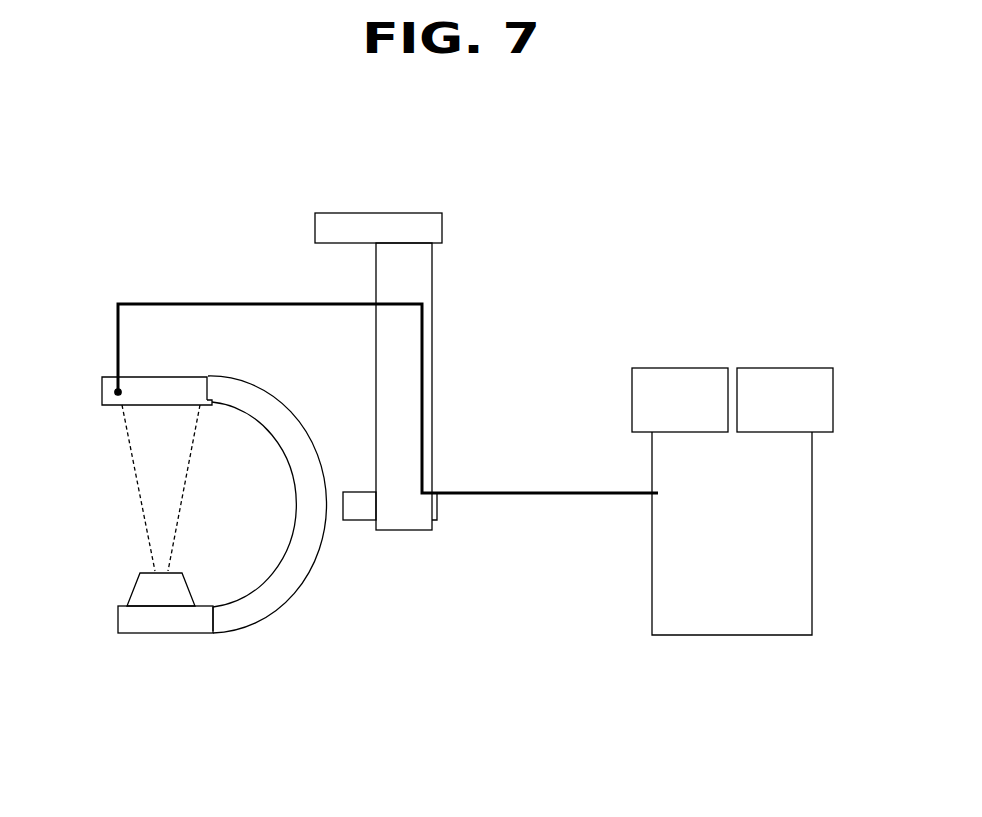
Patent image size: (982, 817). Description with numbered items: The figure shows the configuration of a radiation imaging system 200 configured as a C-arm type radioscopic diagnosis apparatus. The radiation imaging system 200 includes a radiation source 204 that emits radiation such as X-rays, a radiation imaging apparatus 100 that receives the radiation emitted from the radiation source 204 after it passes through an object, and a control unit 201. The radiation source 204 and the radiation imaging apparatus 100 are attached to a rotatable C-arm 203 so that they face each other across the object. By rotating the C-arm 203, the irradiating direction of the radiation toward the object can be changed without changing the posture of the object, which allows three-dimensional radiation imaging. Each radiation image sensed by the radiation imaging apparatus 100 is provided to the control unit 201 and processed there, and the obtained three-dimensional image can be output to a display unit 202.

The radiation imaging apparatus 100 is at (155, 398).
The radiation imaging system 200 is at (464, 487).
The control unit 201 is at (812, 580).
The display unit 202 is at (678, 368).
The C-arm 203 is at (293, 595).
The radiation source 204 is at (128, 593).